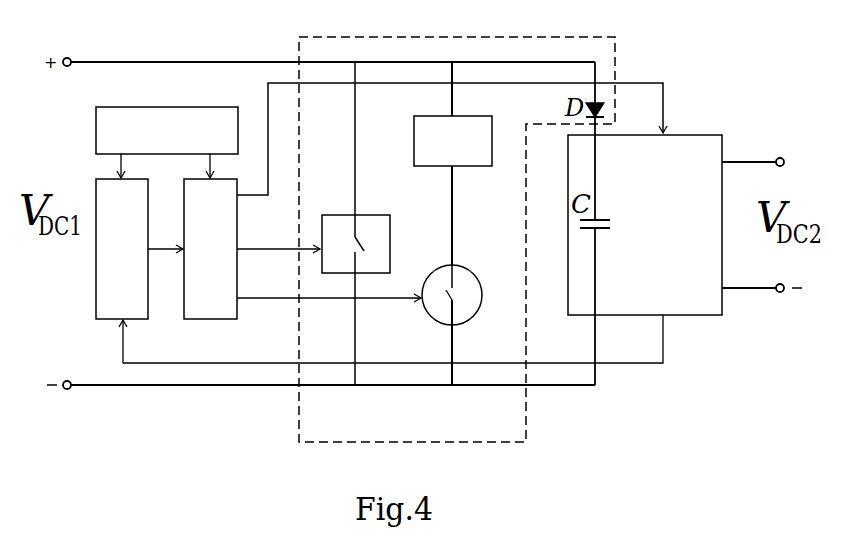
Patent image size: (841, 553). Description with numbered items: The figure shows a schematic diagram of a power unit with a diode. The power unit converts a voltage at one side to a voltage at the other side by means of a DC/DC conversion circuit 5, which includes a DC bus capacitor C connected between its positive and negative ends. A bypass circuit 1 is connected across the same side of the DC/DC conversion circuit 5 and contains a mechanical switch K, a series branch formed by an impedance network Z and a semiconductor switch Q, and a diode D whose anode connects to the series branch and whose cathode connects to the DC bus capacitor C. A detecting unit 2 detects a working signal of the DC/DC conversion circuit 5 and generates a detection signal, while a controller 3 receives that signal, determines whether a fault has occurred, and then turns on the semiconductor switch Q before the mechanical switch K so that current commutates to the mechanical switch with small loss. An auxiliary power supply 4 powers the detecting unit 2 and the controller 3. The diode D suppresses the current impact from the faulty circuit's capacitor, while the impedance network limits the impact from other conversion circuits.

The bypass circuit 1 is at (426, 239).
The detecting unit 2 is at (122, 271).
The controller 3 is at (407, 201).
The auxiliary power supply 4 is at (167, 142).
The DC/DC conversion circuit 5 is at (463, 249).